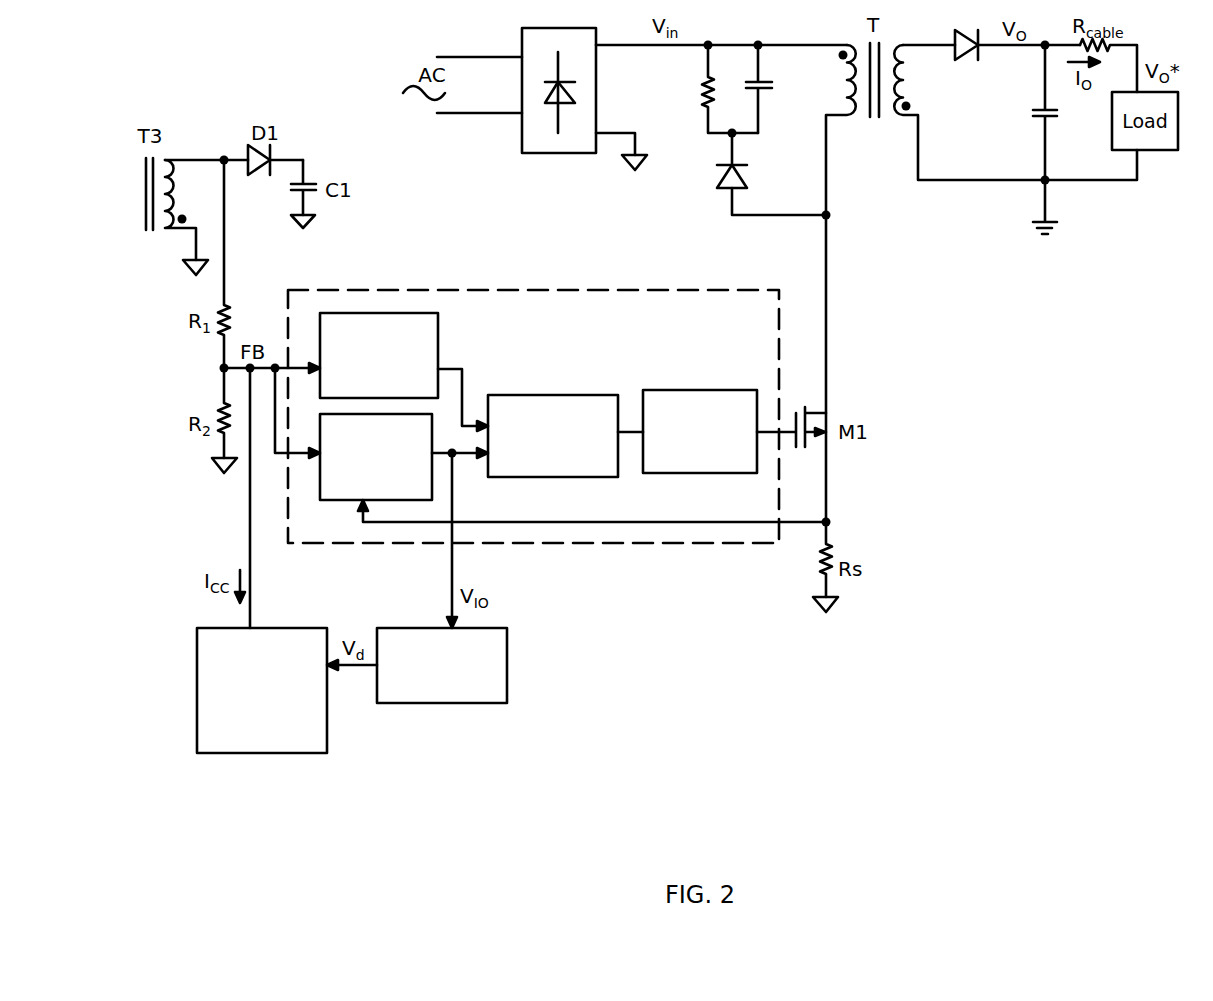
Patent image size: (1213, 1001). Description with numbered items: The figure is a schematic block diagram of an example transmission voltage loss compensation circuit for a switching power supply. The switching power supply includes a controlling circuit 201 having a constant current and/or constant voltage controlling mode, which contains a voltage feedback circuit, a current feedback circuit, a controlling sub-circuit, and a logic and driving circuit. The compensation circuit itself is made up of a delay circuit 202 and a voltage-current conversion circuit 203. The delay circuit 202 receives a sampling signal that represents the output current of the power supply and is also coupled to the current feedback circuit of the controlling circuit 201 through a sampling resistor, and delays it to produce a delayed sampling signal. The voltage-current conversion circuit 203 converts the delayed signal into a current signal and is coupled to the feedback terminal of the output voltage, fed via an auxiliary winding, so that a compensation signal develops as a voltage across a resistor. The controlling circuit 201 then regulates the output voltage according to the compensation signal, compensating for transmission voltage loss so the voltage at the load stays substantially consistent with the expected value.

The controlling circuit 201 is at (768, 321).
The delay circuit 202 is at (459, 692).
The voltage-current conversion circuit 203 is at (317, 744).